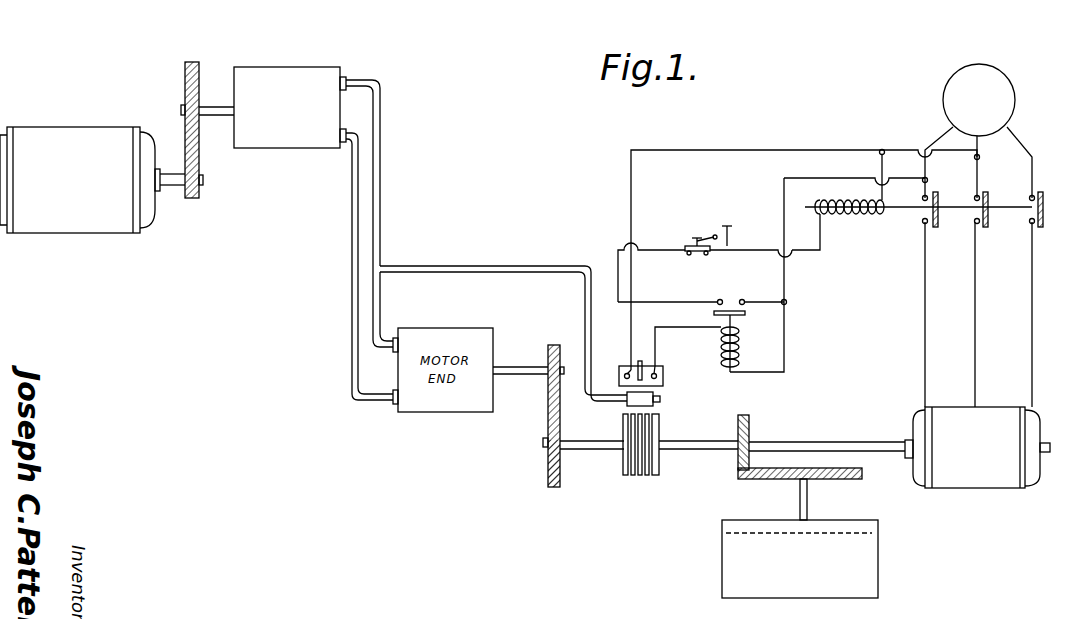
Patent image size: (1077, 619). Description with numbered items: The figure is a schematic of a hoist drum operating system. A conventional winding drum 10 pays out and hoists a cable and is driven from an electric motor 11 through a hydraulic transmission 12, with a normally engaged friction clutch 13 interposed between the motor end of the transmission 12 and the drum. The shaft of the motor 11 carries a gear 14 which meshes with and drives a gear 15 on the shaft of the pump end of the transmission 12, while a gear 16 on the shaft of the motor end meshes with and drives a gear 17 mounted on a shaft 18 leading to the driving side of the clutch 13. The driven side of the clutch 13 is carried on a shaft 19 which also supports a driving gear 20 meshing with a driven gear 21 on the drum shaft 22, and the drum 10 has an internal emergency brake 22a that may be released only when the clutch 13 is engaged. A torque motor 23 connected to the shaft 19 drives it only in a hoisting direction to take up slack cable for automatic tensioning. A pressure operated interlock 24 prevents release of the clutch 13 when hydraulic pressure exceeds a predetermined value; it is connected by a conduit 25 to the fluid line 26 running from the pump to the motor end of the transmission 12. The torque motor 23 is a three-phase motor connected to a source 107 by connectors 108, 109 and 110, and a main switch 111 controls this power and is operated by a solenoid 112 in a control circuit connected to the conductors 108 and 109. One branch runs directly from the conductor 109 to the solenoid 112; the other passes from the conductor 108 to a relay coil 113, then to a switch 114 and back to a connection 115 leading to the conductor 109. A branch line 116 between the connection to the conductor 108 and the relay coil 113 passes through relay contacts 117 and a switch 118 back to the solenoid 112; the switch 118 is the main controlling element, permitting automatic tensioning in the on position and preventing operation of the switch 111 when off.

The winding drum 10 is at (879, 590).
The electric motor 11 is at (74, 126).
The hydraulic transmission 12 is at (325, 64).
The friction clutch 13 is at (660, 433).
The gear 14 is at (199, 191).
The gear 15 is at (200, 64).
The gear 16 is at (548, 346).
The gear 17 is at (546, 478).
The shaft 18 is at (590, 452).
The shaft 19 is at (703, 452).
The driving gear 20 is at (750, 420).
The driven gear 21 is at (862, 478).
The drum shaft 22 is at (809, 505).
The internal brake 22a is at (878, 533).
The torque motor 23 is at (981, 490).
The pressure operated interlock 24 is at (661, 396).
The conduit 25 is at (478, 262).
The fluid line 26 is at (382, 184).
The source 107 is at (1016, 100).
The connector 108 is at (926, 304).
The connector 109 is at (976, 304).
The connector 110 is at (1033, 301).
The main switch 111 is at (1009, 203).
The solenoid 112 is at (855, 220).
The relay coil 113 is at (740, 356).
The switch 114 is at (663, 370).
The connection 115 is at (883, 150).
The branch line 116 is at (745, 302).
The relay contacts 117 is at (745, 314).
The switch 118 is at (681, 240).